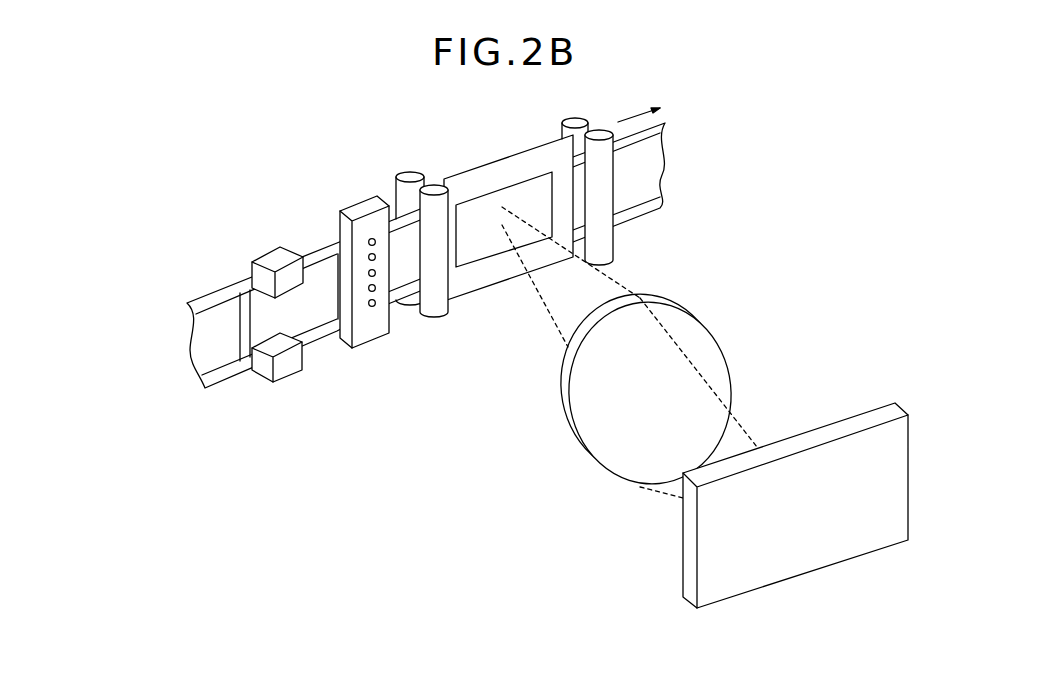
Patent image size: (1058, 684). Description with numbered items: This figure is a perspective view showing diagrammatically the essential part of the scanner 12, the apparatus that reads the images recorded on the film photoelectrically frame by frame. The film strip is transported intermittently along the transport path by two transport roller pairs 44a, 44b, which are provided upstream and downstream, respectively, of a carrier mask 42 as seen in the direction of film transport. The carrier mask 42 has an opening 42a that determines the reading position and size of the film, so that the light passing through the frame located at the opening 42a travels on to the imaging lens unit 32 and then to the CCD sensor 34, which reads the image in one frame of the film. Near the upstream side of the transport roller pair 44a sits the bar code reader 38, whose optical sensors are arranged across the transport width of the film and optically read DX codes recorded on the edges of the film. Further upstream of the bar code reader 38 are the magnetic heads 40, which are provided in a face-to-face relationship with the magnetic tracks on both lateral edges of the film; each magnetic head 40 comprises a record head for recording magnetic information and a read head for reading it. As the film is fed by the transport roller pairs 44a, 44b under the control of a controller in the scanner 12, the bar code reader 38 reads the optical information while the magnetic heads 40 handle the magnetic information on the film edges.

The scanner 12 is at (373, 142).
The imaging lens unit 32 is at (598, 408).
The CCD sensor 34 is at (717, 549).
The bar code reader 38 is at (353, 208).
The magnetic heads 40 is at (277, 260).
The carrier mask 42 is at (478, 175).
The opening 42a is at (513, 197).
The transport roller pair 44a is at (437, 312).
The transport roller pair 44b is at (610, 238).